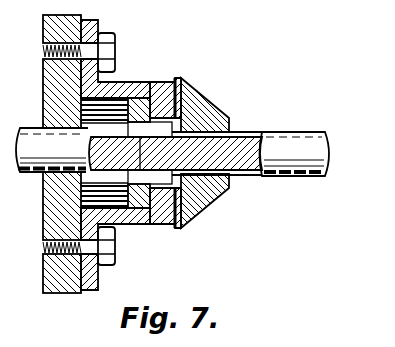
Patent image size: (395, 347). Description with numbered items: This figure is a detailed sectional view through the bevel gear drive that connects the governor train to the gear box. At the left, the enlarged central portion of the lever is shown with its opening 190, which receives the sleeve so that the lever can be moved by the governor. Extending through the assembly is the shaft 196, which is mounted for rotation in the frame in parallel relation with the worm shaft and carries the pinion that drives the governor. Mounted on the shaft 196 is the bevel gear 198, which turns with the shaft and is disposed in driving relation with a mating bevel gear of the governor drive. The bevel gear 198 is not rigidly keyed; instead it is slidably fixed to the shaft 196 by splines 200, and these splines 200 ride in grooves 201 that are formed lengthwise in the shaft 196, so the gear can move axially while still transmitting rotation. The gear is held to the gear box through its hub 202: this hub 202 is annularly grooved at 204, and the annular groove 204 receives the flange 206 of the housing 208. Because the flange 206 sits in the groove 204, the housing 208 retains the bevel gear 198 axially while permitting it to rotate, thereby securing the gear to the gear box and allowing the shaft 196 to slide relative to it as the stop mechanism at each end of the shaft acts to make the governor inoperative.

The opening 190 is at (43, 277).
The shaft 196 is at (29, 177).
The bevel gear 198 is at (229, 114).
The splines 200 is at (152, 82).
The grooves 201 is at (260, 133).
The hub 202 is at (136, 194).
The annular groove 204 is at (168, 230).
The flange 206 is at (184, 86).
The housing 208 is at (121, 82).